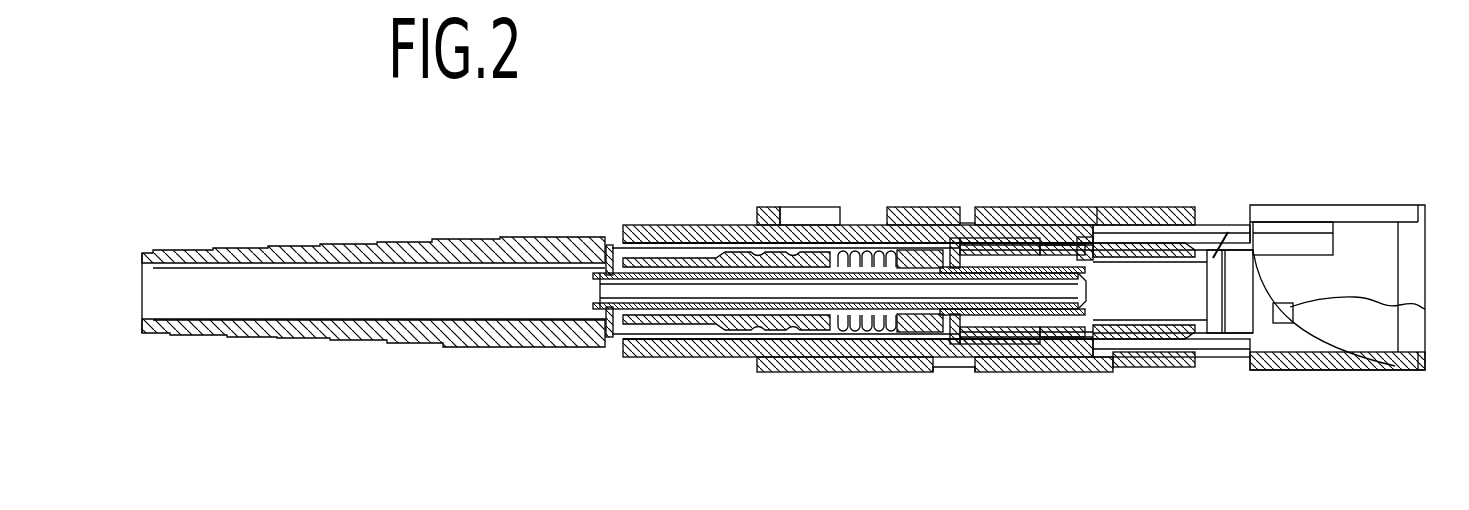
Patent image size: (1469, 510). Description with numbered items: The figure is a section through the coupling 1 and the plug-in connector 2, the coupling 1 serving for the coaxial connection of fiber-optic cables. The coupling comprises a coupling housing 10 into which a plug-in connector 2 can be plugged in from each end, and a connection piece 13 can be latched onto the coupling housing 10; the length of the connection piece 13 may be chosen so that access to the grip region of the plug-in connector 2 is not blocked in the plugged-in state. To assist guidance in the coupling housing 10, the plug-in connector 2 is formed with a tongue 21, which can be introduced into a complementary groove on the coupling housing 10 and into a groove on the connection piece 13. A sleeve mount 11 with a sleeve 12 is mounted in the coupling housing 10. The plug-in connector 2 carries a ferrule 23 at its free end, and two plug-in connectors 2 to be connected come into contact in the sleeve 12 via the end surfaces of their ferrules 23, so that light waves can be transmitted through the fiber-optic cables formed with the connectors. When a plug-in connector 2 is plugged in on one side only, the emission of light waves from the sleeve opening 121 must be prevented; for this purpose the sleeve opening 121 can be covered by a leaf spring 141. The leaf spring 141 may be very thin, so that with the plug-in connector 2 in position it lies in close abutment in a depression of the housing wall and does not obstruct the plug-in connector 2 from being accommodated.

The coupling 1 is at (1031, 259).
The plug-in connector 2 is at (551, 193).
The coupling housing 10 is at (1173, 217).
The sleeve mount 11 is at (1036, 225).
The sleeve 12 is at (1095, 217).
The connection piece 13 is at (806, 372).
The tongue 21 is at (921, 217).
The ferrule 23 is at (1113, 343).
The sleeve opening 121 is at (1228, 232).
The leaf spring 141 is at (1425, 301).